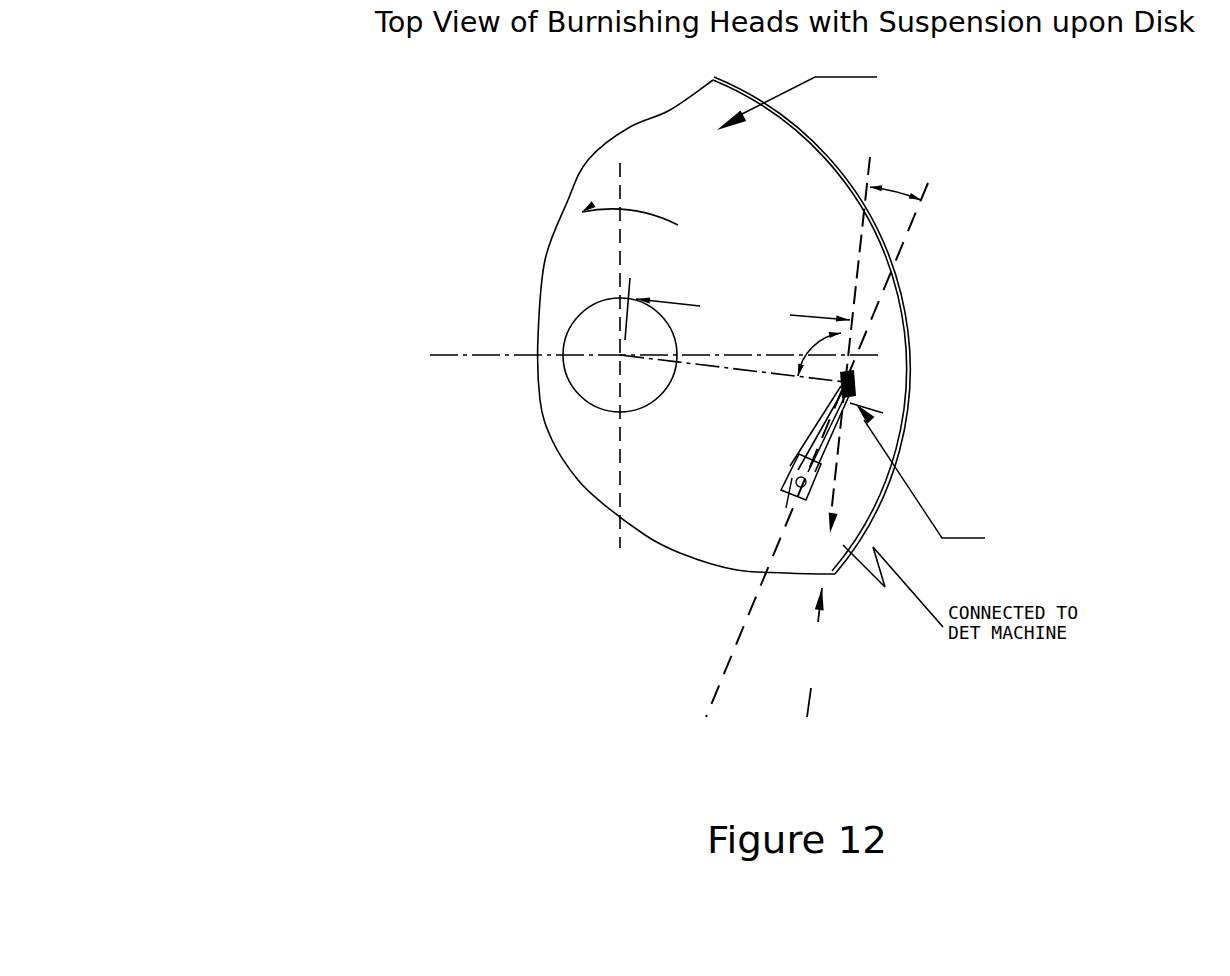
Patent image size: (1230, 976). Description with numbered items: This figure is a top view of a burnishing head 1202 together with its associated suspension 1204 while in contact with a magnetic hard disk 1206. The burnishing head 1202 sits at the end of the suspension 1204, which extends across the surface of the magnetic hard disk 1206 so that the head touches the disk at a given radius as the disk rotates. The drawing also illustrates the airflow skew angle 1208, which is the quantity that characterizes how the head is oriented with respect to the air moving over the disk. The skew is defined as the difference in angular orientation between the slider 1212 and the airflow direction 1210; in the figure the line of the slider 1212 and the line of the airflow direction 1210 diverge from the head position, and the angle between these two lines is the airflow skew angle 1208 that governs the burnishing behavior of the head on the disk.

The burnishing head 1202 is at (848, 381).
The suspension 1204 is at (870, 428).
The magnetic hard disk 1206 is at (760, 160).
The airflow skew angle 1208 is at (921, 200).
The airflow direction 1210 is at (860, 243).
The slider 1212 is at (894, 262).